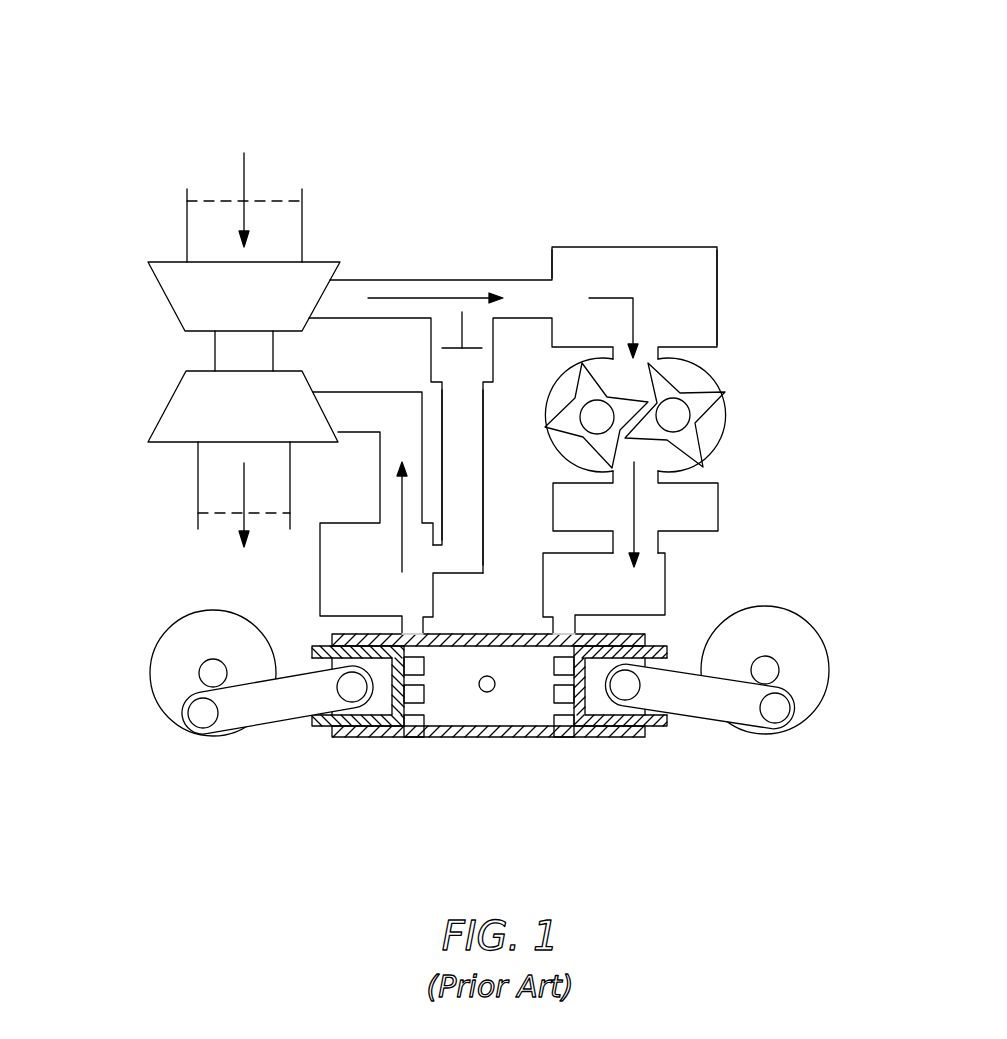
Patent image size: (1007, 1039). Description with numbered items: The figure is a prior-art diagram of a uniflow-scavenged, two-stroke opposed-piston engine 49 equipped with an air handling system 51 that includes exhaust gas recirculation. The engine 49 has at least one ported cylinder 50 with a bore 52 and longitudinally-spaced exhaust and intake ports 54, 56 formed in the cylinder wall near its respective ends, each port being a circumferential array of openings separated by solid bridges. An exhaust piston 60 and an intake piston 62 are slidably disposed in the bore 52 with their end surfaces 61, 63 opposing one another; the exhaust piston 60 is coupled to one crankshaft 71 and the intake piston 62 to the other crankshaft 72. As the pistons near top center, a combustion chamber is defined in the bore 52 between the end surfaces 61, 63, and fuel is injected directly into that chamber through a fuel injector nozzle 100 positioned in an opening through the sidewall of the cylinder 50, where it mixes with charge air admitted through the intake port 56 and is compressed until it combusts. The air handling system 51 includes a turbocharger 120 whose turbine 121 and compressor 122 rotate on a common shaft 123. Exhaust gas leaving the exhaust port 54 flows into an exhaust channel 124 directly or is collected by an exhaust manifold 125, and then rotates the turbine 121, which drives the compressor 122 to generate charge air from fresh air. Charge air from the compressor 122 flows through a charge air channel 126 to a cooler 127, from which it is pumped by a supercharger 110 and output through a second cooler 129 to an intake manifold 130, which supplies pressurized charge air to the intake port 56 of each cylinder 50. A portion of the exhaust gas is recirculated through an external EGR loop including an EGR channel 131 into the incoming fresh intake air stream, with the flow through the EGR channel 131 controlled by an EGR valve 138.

The opposed-piston engine 49 is at (808, 508).
The ported cylinder 50 is at (458, 633).
The air handling system 51 is at (514, 112).
The bore 52 is at (505, 740).
The exhaust port 54 is at (409, 759).
The intake port 56 is at (575, 758).
The exhaust piston 60 is at (316, 732).
The end surface of exhaust piston 61 is at (407, 653).
The intake piston 62 is at (660, 638).
The end surface of intake piston 63 is at (563, 656).
The crankshaft 71 is at (213, 742).
The crankshaft 72 is at (765, 742).
The fuel injector nozzle 100 is at (488, 676).
The supercharger 110 is at (712, 372).
The turbocharger 120 is at (150, 357).
The turbine 121 is at (164, 412).
The compressor 122 is at (167, 297).
The common shaft 123 is at (273, 348).
The exhaust channel 124 is at (361, 480).
The exhaust manifold 125 is at (320, 578).
The charge air channel 126 is at (420, 279).
The cooler 127 is at (717, 305).
The cooler 129 is at (718, 502).
The intake manifold 130 is at (665, 592).
The EGR channel 131 is at (483, 452).
The EGR valve 138 is at (462, 330).